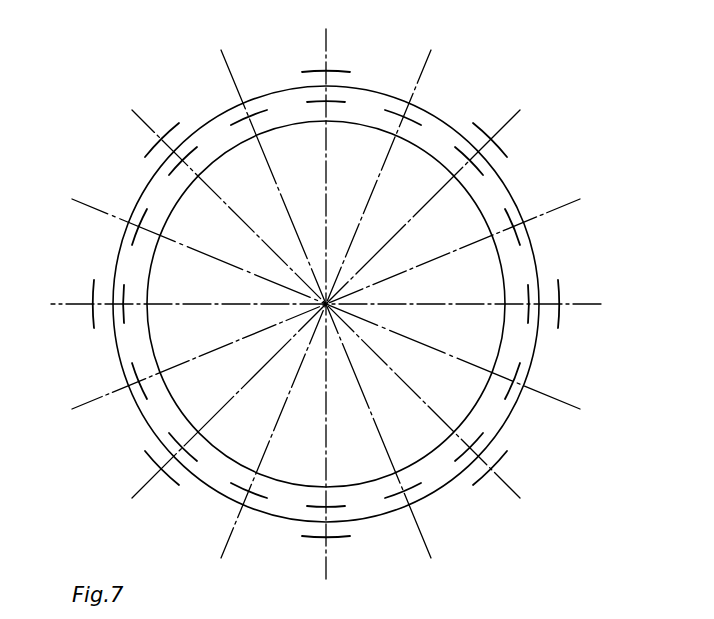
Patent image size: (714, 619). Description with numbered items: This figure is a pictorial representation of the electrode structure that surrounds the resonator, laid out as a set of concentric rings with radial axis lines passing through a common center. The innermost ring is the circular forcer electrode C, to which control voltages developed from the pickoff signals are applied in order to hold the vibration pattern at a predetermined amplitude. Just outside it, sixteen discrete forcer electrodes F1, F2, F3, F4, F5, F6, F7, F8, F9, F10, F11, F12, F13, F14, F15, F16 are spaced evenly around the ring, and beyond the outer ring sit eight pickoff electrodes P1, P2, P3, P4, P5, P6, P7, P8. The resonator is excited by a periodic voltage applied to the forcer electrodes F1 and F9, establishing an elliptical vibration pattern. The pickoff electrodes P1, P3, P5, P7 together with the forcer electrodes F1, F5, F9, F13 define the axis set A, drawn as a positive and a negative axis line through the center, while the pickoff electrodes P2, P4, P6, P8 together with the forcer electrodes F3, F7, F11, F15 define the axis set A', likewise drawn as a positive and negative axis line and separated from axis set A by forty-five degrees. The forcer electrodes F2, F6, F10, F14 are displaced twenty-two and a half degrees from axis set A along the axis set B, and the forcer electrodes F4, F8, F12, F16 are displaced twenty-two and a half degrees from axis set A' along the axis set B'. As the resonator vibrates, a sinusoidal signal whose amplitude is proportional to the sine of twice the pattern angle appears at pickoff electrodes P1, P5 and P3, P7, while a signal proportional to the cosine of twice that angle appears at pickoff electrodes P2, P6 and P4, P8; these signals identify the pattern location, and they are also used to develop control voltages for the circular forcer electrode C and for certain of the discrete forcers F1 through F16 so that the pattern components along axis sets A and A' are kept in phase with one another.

The circular forcer electrode C is at (502, 277).
The axis set A is at (337, 289).
The axis set B is at (337, 289).
The axis set A' is at (339, 294).
The axis set B' is at (337, 314).
The forcer electrode F1 is at (345, 101).
The forcer electrode F2 is at (419, 125).
The forcer electrode F3 is at (481, 177).
The forcer electrode F4 is at (518, 247).
The forcer electrode F5 is at (526, 323).
The forcer electrode F6 is at (505, 396).
The forcer electrode F7 is at (458, 455).
The forcer electrode F8 is at (384, 497).
The forcer electrode F9 is at (307, 506).
The forcer electrode F10 is at (232, 482).
The forcer electrode F11 is at (174, 432).
The forcer electrode F12 is at (135, 362).
The forcer electrode F13 is at (127, 285).
The forcer electrode F14 is at (136, 245).
The forcer electrode F15 is at (174, 178).
The forcer electrode F16 is at (267, 112).
The pickoff electrode P1 is at (348, 72).
The pickoff electrode P2 is at (505, 156).
The pickoff electrode P3 is at (557, 328).
The pickoff electrode P4 is at (505, 458).
The pickoff electrode P5 is at (350, 536).
The pickoff electrode P6 is at (175, 485).
The pickoff electrode P7 is at (97, 328).
The pickoff electrode P8 is at (178, 128).